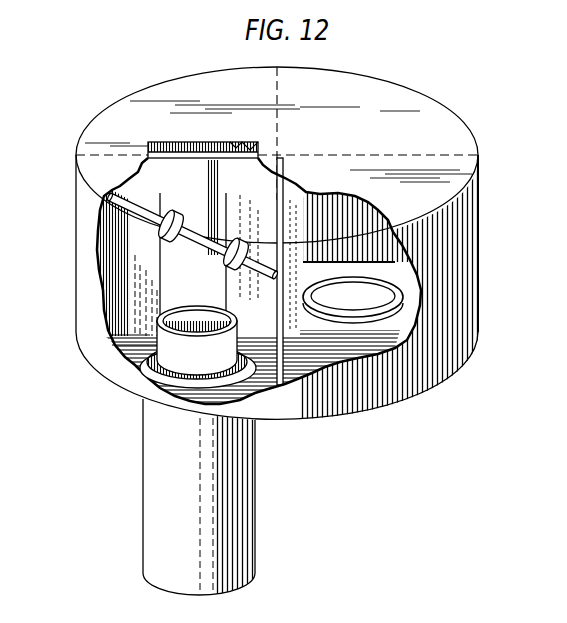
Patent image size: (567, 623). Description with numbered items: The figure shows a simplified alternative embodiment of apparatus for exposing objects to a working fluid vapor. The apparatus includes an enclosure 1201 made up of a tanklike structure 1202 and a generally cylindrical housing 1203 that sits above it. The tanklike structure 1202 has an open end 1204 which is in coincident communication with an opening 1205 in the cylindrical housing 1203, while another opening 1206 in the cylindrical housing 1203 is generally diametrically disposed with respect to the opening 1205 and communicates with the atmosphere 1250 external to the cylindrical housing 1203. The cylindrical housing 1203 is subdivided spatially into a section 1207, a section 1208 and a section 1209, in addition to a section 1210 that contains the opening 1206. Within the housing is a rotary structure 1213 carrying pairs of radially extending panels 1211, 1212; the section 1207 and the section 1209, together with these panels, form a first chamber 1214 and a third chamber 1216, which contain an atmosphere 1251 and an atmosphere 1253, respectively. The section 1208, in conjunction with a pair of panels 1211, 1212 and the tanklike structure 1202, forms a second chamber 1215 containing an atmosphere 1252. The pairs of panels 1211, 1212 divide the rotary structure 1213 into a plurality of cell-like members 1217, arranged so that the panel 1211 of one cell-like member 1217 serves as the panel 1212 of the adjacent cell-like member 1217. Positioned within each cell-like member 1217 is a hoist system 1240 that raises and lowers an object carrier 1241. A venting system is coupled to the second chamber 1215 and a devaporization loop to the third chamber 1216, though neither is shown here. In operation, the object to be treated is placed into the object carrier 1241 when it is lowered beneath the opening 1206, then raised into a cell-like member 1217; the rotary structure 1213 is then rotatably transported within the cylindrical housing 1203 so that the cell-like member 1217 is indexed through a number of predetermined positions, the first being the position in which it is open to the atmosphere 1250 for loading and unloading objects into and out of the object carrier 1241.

The enclosure 1201 is at (273, 447).
The tanklike structure 1202 is at (171, 518).
The cylindrical housing 1203 is at (428, 393).
The open end 1204 is at (162, 380).
The opening 1205 is at (243, 370).
The opening 1206 is at (373, 314).
The section 1207 is at (153, 92).
The section 1208 is at (96, 194).
The section 1209 is at (460, 171).
The section 1210 is at (443, 124).
The panel 1211 is at (213, 147).
The panel 1212 is at (270, 222).
The rotary structure 1213 is at (266, 136).
The first chamber 1214 is at (197, 143).
The second chamber 1215 is at (118, 366).
The third chamber 1216 is at (340, 362).
The cell-like member 1217 is at (118, 236).
The hoist system 1240 is at (180, 209).
The object carrier 1241 is at (193, 314).
The atmosphere 1250 is at (485, 311).
The atmosphere 1251 is at (165, 147).
The atmosphere 1252 is at (120, 298).
The atmosphere 1253 is at (308, 385).